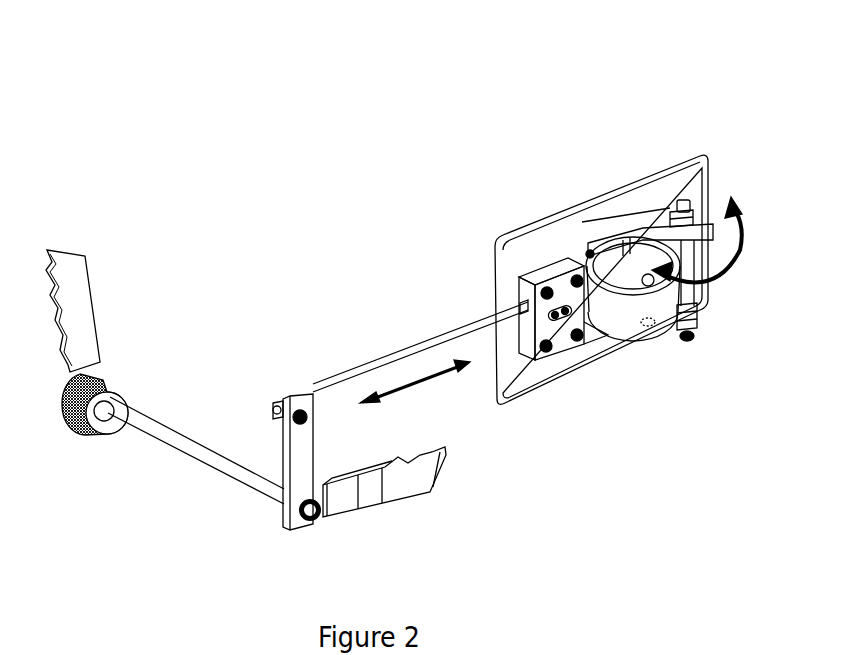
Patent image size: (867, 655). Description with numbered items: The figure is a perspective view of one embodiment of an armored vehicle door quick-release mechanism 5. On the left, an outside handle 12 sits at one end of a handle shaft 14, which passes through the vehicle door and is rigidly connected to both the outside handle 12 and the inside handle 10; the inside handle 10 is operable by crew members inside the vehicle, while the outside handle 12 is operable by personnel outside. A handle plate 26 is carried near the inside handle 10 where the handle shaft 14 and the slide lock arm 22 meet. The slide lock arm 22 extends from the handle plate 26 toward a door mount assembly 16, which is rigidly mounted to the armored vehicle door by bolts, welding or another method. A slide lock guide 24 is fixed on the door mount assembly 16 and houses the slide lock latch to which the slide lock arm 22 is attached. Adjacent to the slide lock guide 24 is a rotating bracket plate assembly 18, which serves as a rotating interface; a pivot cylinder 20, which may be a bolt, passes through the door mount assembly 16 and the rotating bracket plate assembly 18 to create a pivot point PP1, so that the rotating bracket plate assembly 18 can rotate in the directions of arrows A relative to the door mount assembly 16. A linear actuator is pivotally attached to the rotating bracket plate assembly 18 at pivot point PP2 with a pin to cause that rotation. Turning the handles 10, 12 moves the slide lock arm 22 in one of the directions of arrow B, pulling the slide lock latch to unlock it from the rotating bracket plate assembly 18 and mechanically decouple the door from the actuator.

The armored vehicle door quick-release mechanism 5 is at (380, 78).
The inside handle 10 is at (403, 480).
The outside handle 12 is at (83, 297).
The handle shaft 14 is at (187, 450).
The door mount assembly 16 is at (585, 227).
The rotating bracket plate assembly 18 is at (657, 335).
The pivot cylinder 20 is at (686, 295).
The slide lock arm 22 is at (423, 353).
The slide lock guide 24 is at (558, 358).
The handle plate 26 is at (297, 460).
The pivot point PP1 is at (685, 196).
The pivot point PP2 is at (649, 272).
The arrows A is at (742, 268).
The arrow B is at (418, 383).